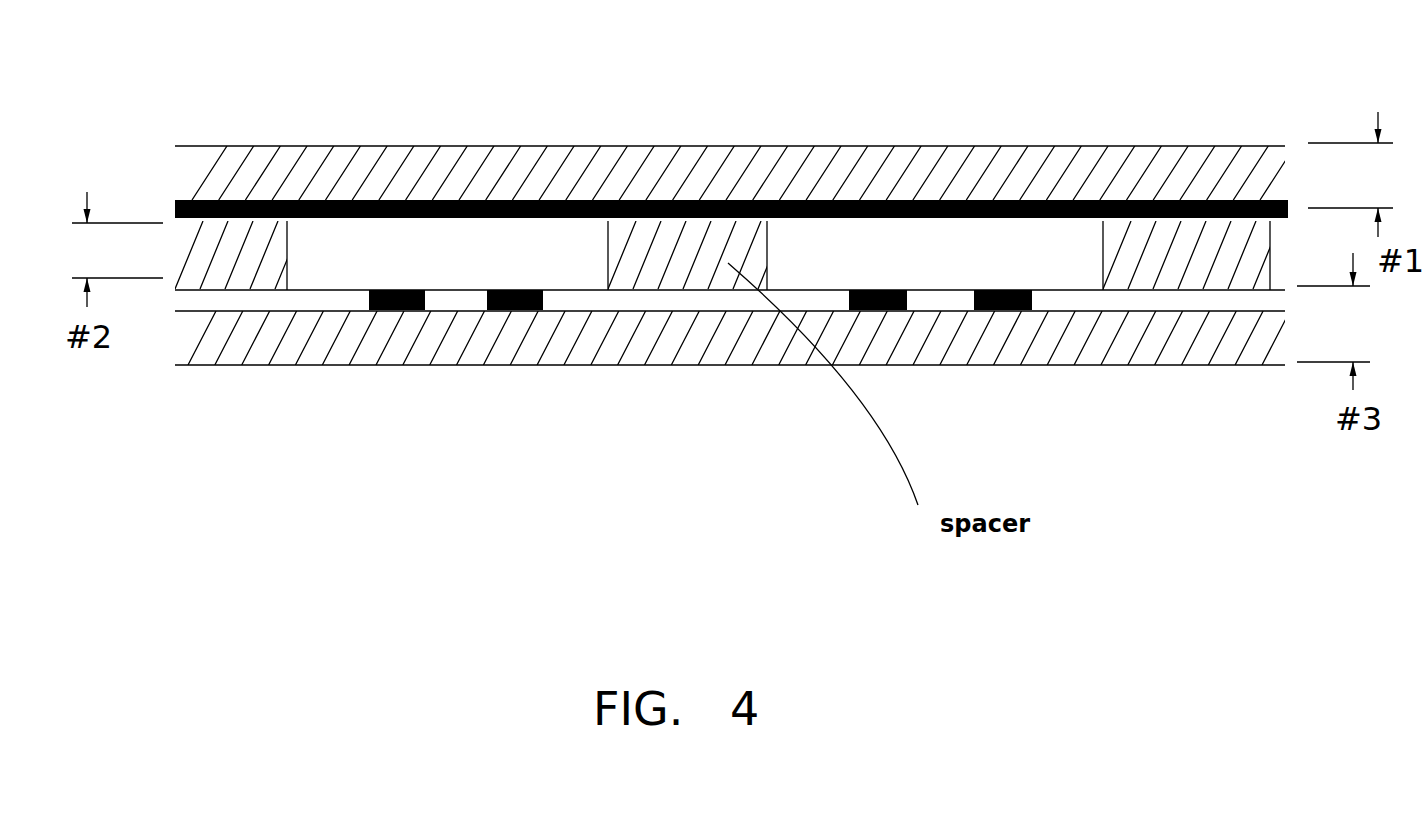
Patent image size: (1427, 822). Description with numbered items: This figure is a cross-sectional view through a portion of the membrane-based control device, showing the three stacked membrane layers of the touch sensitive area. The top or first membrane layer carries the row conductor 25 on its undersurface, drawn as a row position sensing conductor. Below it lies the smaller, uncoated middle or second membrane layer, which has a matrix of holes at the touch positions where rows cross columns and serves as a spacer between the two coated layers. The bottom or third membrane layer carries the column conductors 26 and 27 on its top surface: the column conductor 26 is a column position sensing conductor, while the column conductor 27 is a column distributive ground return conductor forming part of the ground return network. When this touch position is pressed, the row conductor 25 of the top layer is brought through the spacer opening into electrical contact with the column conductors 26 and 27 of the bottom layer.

The row conductor 25 is at (468, 200).
The column conductor 26 is at (393, 312).
The column conductor 27 is at (527, 310).